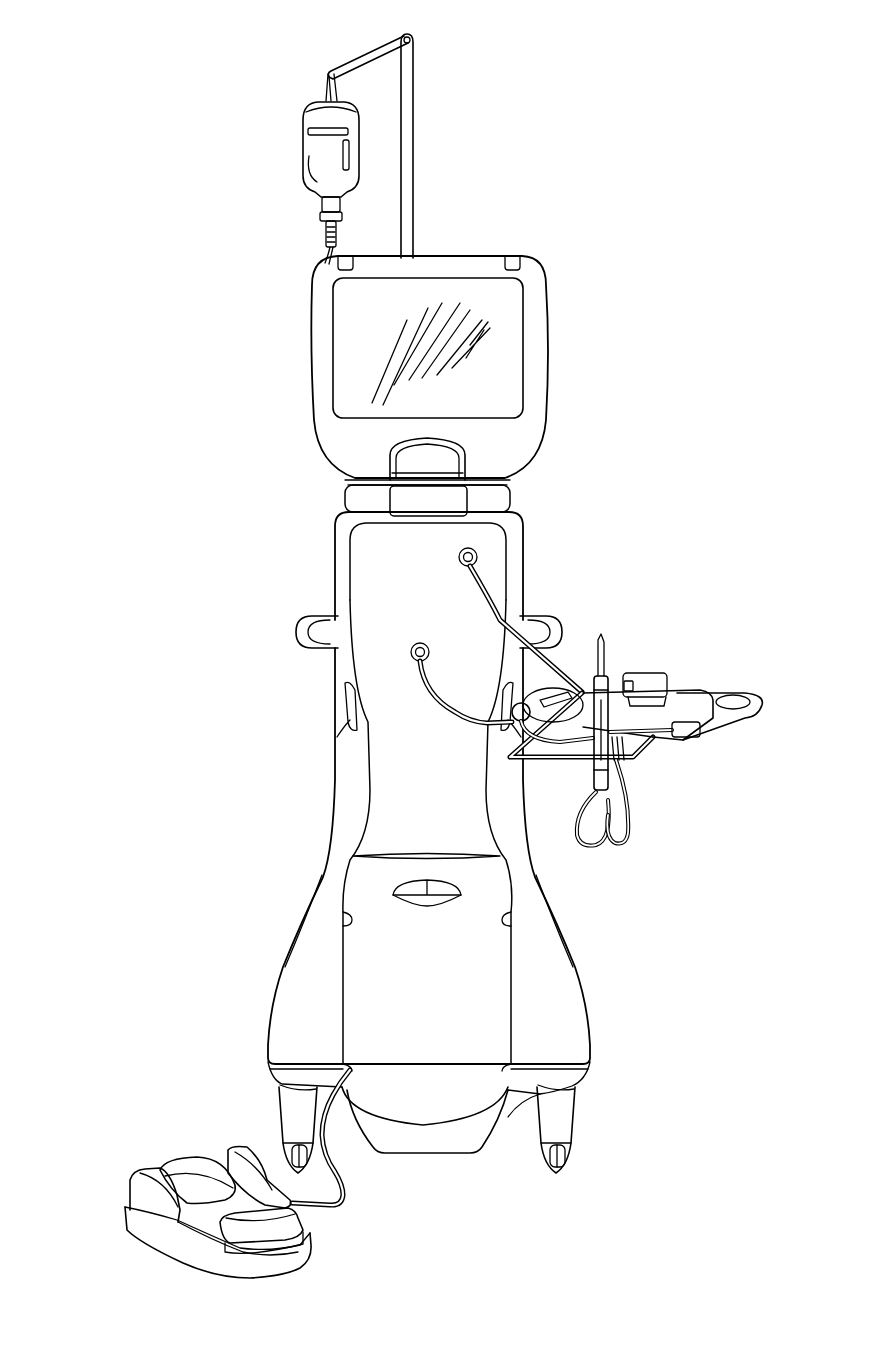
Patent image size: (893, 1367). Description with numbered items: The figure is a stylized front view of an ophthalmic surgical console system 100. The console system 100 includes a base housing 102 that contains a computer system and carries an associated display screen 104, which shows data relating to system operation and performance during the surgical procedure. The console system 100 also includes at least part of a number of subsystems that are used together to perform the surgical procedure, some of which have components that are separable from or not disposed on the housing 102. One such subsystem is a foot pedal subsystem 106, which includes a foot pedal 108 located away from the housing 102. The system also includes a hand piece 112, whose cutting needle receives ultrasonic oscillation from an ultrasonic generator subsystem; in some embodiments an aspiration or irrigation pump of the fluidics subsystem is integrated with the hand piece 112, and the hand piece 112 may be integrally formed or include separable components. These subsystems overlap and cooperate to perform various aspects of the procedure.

The ophthalmic surgical console system 100 is at (532, 64).
The base housing 102 is at (303, 803).
The display screen 104 is at (308, 341).
The foot pedal subsystem 106 is at (206, 1174).
The foot pedal 108 is at (133, 1191).
The hand piece 112 is at (608, 622).